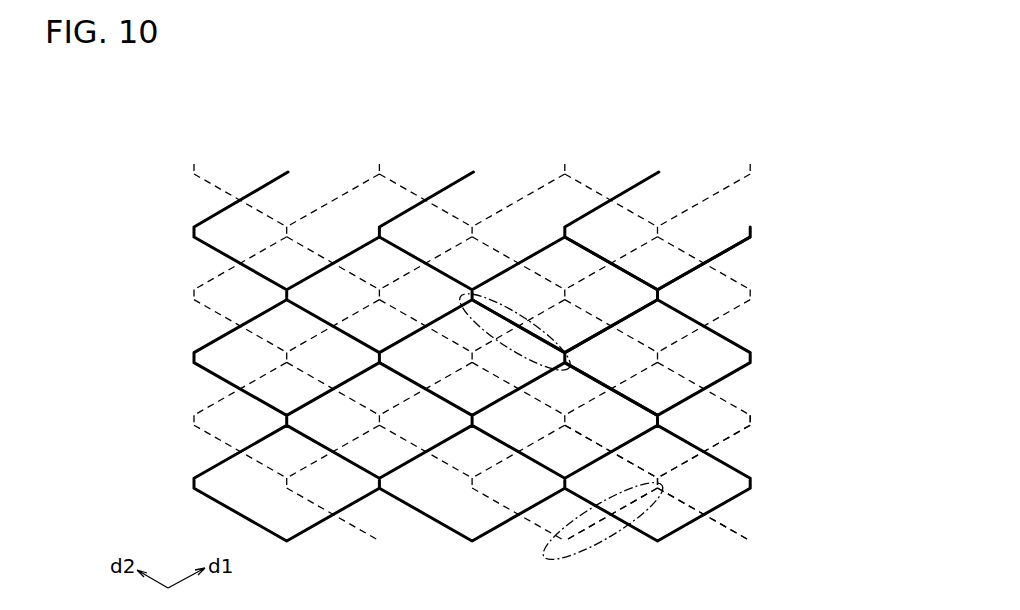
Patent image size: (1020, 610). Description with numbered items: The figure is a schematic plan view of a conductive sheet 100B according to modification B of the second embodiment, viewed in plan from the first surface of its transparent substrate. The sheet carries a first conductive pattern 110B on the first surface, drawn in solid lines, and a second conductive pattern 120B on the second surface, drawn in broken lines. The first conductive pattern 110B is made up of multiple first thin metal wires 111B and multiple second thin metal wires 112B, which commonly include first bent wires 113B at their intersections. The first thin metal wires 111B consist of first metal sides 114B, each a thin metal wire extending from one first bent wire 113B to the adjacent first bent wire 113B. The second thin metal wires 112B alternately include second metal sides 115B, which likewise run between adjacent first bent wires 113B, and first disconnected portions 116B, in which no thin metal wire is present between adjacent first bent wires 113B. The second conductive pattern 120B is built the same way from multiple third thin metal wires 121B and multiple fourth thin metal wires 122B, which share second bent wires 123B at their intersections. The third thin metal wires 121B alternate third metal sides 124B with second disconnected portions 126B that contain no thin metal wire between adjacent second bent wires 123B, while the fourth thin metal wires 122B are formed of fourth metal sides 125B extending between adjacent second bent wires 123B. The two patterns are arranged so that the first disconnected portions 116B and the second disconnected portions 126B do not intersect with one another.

The conductive sheet 100B is at (315, 135).
The first conductive pattern 110B is at (677, 160).
The first thin metal wires 111B is at (740, 243).
The second thin metal wires 112B is at (640, 277).
The first bent wires 113B is at (660, 298).
The first metal sides 114B is at (628, 314).
The second metal sides 115B is at (590, 372).
The first disconnected portions 116B is at (482, 299).
The second conductive pattern 120B is at (588, 163).
The third thin metal wires 121B is at (742, 432).
The fourth thin metal wires 122B is at (740, 536).
The second bent wires 123B is at (748, 424).
The third metal sides 124B is at (678, 464).
The fourth metal sides 125B is at (600, 444).
The second disconnected portions 126B is at (595, 544).